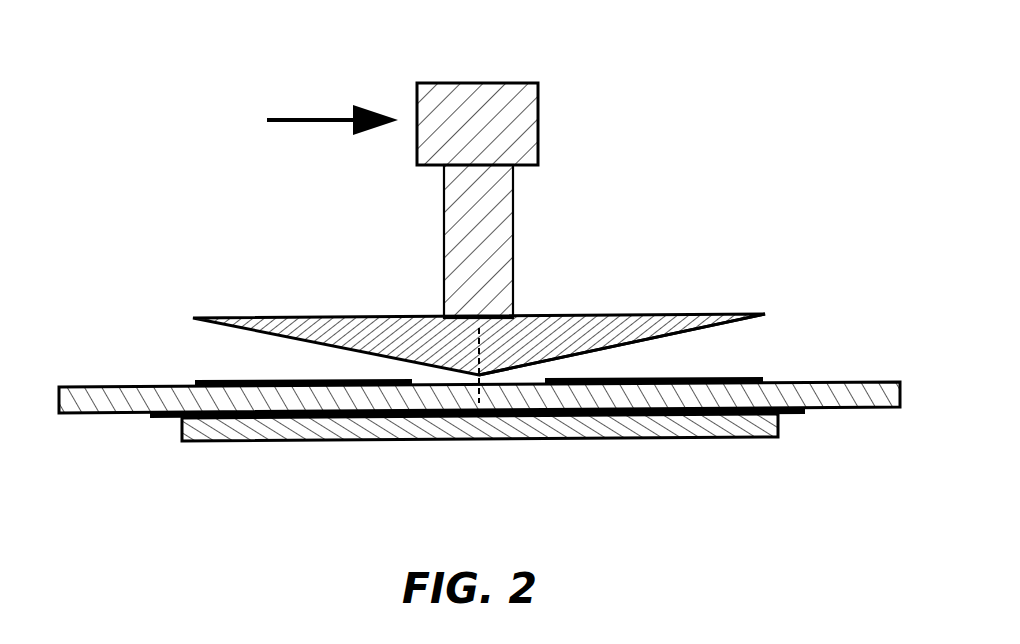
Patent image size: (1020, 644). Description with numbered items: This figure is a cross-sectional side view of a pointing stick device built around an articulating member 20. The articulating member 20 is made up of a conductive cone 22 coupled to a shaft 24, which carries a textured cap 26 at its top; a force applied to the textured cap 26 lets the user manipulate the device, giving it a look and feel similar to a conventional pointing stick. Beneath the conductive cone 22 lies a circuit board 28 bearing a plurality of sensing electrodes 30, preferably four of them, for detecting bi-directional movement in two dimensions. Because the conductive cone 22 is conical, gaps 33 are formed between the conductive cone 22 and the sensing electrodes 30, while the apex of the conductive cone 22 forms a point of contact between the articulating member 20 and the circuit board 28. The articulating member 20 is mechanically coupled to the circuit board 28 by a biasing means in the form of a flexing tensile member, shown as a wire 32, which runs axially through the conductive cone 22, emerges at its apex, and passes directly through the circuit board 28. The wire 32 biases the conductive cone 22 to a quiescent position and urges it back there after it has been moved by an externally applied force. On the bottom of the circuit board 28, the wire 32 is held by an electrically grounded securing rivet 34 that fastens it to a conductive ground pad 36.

The articulating member 20 is at (330, 222).
The conductive cone 22 is at (222, 352).
The shaft 24 is at (513, 232).
The textured cap 26 is at (539, 115).
The circuit board 28 is at (108, 413).
The sensing electrodes 30 is at (748, 374).
The wire 32 is at (483, 338).
The gaps 33 is at (720, 348).
The securing rivet 34 is at (485, 422).
The conductive ground pad 36 is at (795, 414).